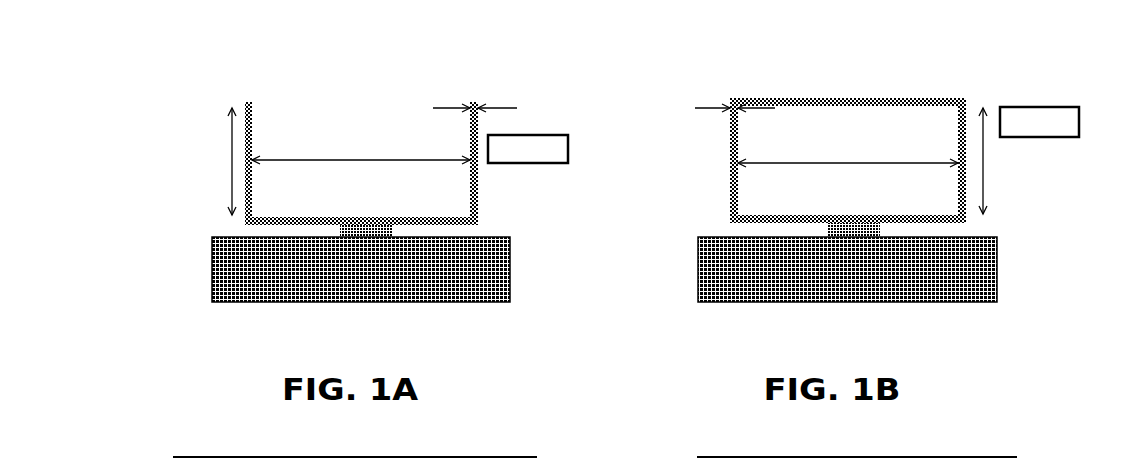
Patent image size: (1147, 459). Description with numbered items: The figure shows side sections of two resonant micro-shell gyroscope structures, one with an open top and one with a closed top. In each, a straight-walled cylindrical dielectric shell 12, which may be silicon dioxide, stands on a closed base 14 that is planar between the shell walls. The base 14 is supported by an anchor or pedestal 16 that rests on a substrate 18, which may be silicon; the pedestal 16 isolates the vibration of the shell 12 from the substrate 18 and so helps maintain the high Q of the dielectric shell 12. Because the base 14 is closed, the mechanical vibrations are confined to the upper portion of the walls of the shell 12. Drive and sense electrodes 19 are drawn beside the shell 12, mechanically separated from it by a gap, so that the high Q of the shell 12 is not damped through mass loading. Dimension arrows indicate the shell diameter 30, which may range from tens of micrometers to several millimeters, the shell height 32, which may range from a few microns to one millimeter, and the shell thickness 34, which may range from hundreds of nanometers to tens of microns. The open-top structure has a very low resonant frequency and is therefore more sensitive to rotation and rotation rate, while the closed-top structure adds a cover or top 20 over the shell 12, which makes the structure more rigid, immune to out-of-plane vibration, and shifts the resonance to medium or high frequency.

In FIG. 1A, the dielectric resonant shell 12 is at (245, 182).
In FIG. 1B, the dielectric resonant shell 12 is at (731, 174).
In FIG. 1A, the base 14 is at (272, 219).
In FIG. 1B, the base 14 is at (755, 219).
In FIG. 1A, the anchor or pedestal 16 is at (343, 230).
In FIG. 1B, the anchor or pedestal 16 is at (850, 230).
In FIG. 1A, the substrate 18 is at (233, 268).
In FIG. 1B, the substrate 18 is at (714, 270).
In FIG. 1A, the drive and sense electrodes 19 is at (546, 145).
In FIG. 1B, the drive and sense electrodes 19 is at (1033, 125).
In FIG. 1B, the cover or top 20 is at (907, 99).
In FIG. 1A, the shell diameter 30 is at (372, 142).
In FIG. 1B, the shell diameter 30 is at (845, 137).
In FIG. 1A, the shell height 32 is at (230, 140).
In FIG. 1B, the shell height 32 is at (980, 173).
In FIG. 1A, the shell thickness 34 is at (470, 72).
In FIG. 1B, the shell thickness 34 is at (730, 72).